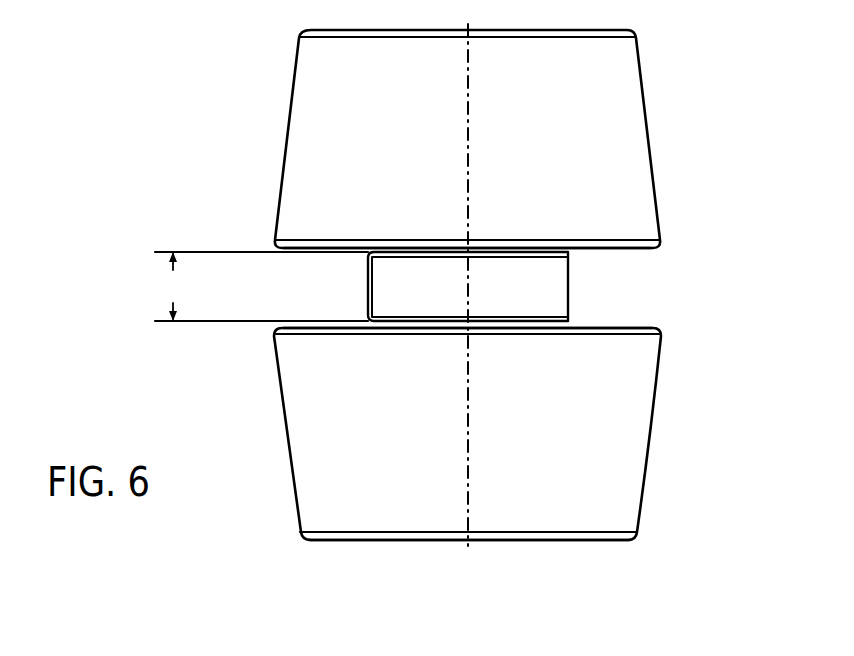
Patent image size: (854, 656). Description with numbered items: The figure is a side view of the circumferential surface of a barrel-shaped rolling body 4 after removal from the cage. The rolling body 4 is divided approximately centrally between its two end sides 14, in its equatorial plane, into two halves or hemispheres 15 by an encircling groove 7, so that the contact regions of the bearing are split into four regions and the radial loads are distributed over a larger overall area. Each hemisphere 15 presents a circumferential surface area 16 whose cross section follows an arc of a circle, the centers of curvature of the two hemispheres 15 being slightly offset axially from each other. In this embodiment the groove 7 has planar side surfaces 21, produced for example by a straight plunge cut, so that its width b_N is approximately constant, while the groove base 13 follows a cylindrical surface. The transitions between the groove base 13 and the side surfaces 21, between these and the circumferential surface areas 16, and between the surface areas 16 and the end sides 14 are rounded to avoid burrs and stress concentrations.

The barrel-shaped rolling body 4 is at (446, 324).
The circumferential surface area 16 is at (652, 130).
The hemisphere 15 is at (645, 390).
The groove base 13 is at (568, 288).
The encircling groove 7 is at (643, 250).
The groove side surface 21 is at (640, 322).
The end side 14 is at (543, 540).